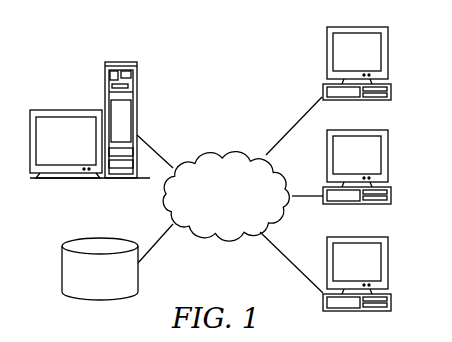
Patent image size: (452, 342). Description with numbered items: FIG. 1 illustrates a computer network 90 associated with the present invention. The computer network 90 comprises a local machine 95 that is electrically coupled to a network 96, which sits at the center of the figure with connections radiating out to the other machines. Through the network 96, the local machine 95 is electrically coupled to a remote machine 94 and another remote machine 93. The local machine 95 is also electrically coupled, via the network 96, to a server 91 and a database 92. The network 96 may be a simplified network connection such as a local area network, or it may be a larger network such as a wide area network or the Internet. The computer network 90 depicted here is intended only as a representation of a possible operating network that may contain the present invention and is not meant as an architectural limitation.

The computer network 90 is at (208, 84).
The server 91 is at (70, 108).
The database 92 is at (91, 280).
The remote machine 93 is at (388, 265).
The remote machine 94 is at (388, 156).
The local machine 95 is at (388, 53).
The network 96 is at (217, 206).